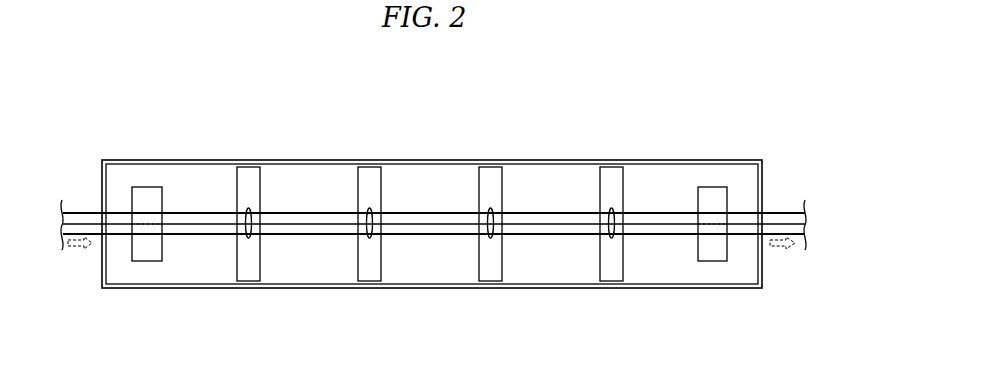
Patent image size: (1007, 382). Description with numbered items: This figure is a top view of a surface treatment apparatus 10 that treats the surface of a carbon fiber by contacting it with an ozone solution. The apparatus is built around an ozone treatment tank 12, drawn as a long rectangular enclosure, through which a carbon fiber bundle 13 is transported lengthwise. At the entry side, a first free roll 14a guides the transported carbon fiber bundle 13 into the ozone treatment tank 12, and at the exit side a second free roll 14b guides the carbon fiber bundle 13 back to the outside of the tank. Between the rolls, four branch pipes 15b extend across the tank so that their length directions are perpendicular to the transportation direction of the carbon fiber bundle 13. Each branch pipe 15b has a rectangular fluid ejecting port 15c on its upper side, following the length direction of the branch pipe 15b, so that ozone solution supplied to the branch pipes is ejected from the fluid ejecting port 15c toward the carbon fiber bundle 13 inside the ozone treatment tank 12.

The surface treatment apparatus 10 is at (480, 136).
The ozone treatment tank 12 is at (302, 289).
The carbon fiber bundle 13 is at (86, 236).
The first free roll 14a is at (155, 196).
The second free roll 14b is at (713, 196).
The branch pipes 15b is at (247, 178).
The fluid ejecting port 15c is at (252, 211).